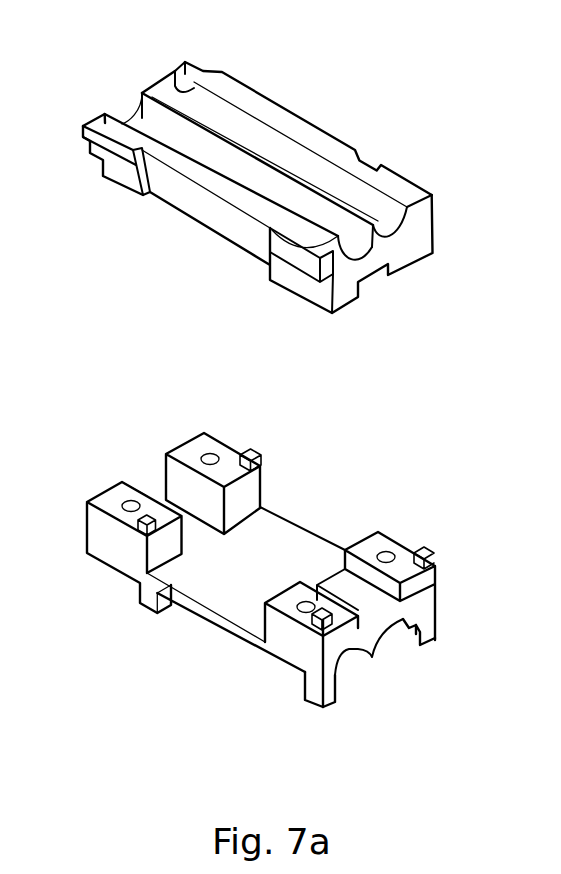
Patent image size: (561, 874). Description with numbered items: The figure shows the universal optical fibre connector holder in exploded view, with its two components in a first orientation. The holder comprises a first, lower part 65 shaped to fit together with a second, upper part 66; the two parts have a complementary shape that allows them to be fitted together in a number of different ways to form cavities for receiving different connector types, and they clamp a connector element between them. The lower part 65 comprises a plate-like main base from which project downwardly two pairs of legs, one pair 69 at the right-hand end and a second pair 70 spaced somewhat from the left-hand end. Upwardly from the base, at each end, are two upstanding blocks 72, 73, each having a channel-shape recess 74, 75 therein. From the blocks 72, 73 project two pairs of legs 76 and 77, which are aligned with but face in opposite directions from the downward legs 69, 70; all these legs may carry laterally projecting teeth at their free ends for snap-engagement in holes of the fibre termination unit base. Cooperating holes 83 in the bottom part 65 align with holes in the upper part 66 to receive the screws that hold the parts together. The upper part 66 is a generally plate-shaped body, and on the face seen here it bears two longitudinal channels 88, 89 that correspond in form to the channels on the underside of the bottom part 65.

The second part 66 is at (308, 132).
The longitudinal channel 88 is at (137, 115).
The longitudinal channel 89 is at (180, 90).
The first part 65 is at (265, 576).
The pair of legs 70 is at (292, 545).
The cooperating holes 83 is at (110, 502).
The channel-shape recess 75 is at (160, 490).
The upstanding block 73 is at (190, 450).
The upstanding block 72 is at (378, 540).
The channel-shape recess 74 is at (367, 607).
The pair of legs 69 is at (440, 633).
The pair of legs 77 is at (245, 453).
The pair of legs 76 is at (430, 550).